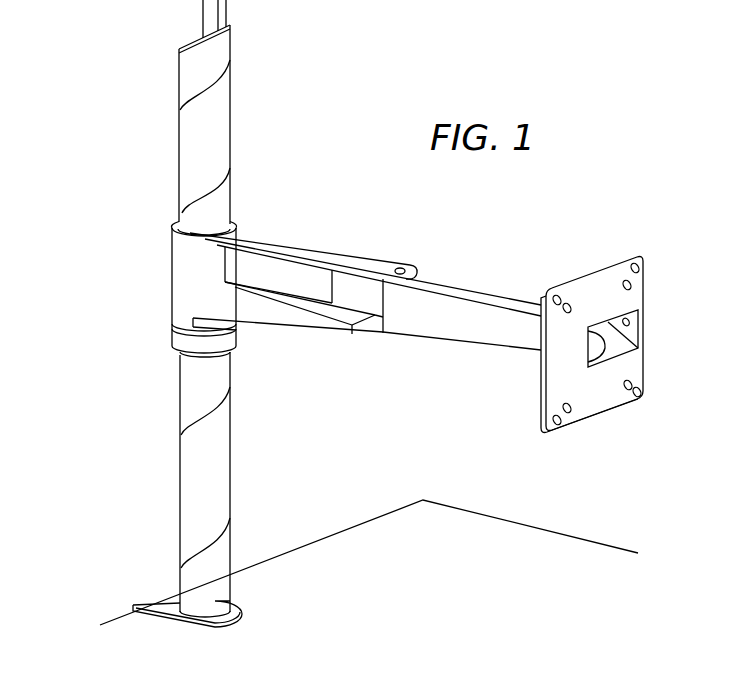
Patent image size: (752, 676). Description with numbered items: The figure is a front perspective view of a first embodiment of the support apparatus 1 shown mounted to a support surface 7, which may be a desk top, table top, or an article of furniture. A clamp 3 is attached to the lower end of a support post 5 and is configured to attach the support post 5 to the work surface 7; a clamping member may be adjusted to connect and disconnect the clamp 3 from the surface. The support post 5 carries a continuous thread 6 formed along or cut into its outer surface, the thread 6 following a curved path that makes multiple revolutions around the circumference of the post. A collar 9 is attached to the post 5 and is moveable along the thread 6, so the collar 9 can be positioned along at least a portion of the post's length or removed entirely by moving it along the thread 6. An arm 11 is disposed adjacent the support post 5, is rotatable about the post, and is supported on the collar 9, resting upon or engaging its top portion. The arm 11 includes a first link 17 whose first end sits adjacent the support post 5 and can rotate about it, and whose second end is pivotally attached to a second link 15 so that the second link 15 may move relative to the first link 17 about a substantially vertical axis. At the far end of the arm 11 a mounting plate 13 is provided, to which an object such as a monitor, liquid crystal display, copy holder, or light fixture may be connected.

The support apparatus 1 is at (120, 478).
The clamp 3 is at (162, 605).
The support post 5 is at (225, 489).
The thread 6 is at (190, 415).
The support surface 7 is at (392, 523).
The collar 9 is at (176, 339).
The arm 11 is at (351, 203).
The mounting plate 13 is at (598, 408).
The second link 15 is at (450, 337).
The first link 17 is at (290, 322).